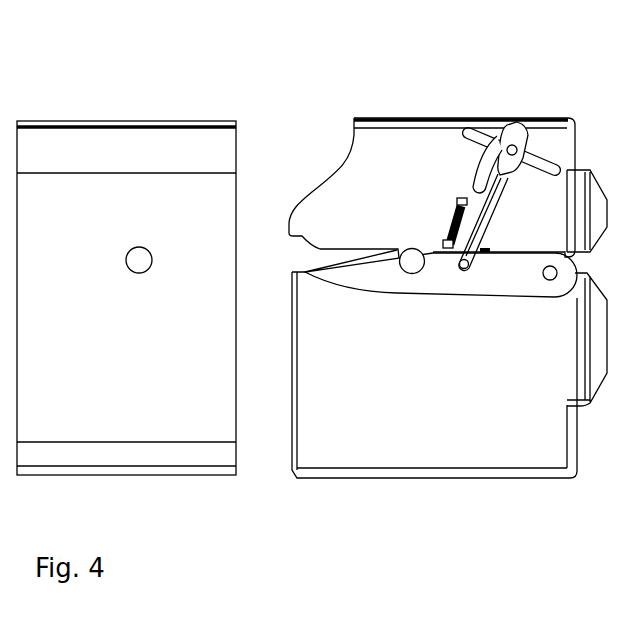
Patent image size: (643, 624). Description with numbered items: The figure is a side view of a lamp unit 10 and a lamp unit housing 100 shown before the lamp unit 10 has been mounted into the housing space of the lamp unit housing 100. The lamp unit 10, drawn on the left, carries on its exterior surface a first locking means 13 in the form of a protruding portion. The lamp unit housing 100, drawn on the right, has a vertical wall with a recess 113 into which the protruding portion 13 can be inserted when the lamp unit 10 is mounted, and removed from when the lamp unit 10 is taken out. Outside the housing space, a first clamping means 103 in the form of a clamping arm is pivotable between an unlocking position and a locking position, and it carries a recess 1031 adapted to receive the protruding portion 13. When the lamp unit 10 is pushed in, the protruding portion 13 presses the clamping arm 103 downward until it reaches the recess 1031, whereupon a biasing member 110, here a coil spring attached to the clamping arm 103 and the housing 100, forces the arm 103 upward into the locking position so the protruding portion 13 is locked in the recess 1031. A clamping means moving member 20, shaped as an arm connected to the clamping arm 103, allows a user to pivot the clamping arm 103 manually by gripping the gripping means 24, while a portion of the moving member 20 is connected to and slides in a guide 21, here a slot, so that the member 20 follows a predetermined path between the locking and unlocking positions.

The lamp unit 10 is at (126, 258).
The first locking means 13 is at (141, 262).
The lamp unit housing 100 is at (453, 97).
The recess 113 is at (306, 253).
The first clamping means 103 is at (441, 328).
The recess 1031 is at (405, 273).
The biasing member 110 is at (455, 249).
The clamping means moving member 20 is at (497, 212).
The guide 21 is at (483, 173).
The gripping means 24 is at (482, 125).